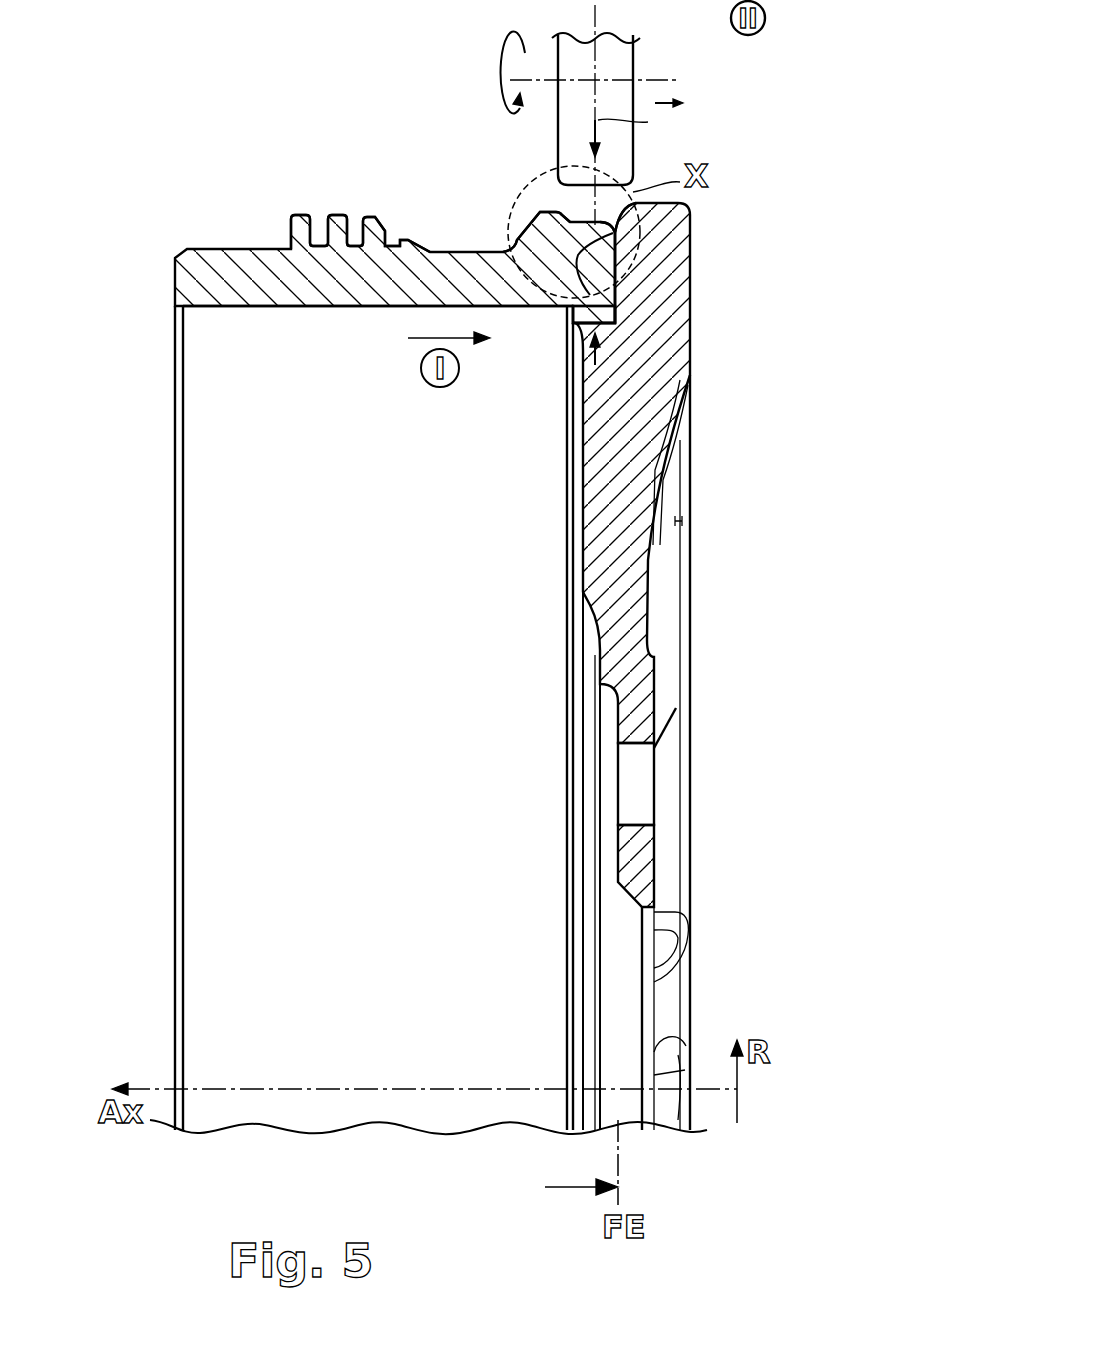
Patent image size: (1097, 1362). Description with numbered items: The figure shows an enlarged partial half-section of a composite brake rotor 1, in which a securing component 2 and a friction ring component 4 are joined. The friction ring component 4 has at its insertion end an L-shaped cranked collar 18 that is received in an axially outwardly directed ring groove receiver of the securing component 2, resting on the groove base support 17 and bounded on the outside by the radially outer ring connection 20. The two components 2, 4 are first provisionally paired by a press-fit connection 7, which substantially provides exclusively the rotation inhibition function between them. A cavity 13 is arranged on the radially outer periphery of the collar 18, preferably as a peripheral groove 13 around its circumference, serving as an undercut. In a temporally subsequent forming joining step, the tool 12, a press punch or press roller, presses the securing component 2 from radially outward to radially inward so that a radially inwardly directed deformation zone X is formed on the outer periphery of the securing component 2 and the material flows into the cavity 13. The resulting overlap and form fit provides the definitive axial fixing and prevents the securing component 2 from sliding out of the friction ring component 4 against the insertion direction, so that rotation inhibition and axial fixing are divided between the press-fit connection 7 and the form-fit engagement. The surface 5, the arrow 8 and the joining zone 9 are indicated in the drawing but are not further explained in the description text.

The composite brake rotor 1 is at (212, 182).
The securing component 2 is at (620, 606).
The friction ring component 4 is at (360, 218).
The flange underside 5 is at (315, 308).
The press-fit connection 7 is at (684, 394).
The direction arrow 8 is at (600, 333).
The joining zone 9 is at (690, 322).
The tool 12 is at (617, 58).
The cavity 13 is at (622, 274).
The groove base support 17 is at (620, 310).
The collar 18 is at (585, 287).
The radially outer ring connection 20 is at (528, 205).